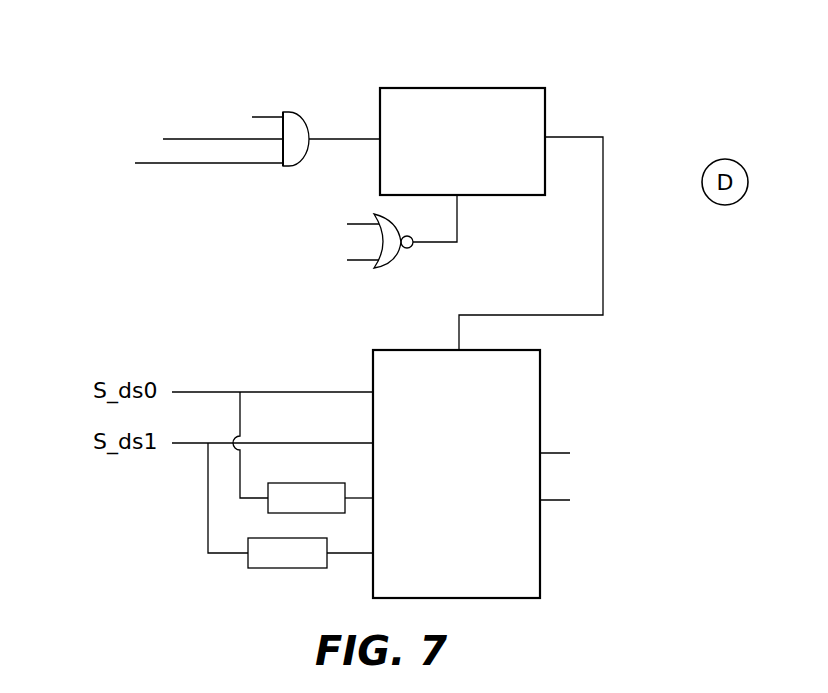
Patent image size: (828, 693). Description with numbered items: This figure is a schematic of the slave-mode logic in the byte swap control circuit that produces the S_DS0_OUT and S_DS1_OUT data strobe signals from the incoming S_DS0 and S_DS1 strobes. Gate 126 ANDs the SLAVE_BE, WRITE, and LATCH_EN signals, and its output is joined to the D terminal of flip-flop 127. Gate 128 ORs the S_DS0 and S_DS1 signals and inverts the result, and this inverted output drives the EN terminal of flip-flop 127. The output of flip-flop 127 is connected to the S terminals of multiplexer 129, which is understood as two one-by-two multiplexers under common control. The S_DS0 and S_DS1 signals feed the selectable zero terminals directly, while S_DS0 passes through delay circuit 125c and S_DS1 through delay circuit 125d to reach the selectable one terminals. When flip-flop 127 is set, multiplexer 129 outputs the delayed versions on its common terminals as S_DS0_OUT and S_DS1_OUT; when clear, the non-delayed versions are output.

The gate 126 is at (287, 113).
The flip-flop 127 is at (527, 88).
The gate 128 is at (389, 262).
The multiplexer 129 is at (540, 362).
The delay circuit 125c is at (325, 483).
The delay circuit 125d is at (315, 568).